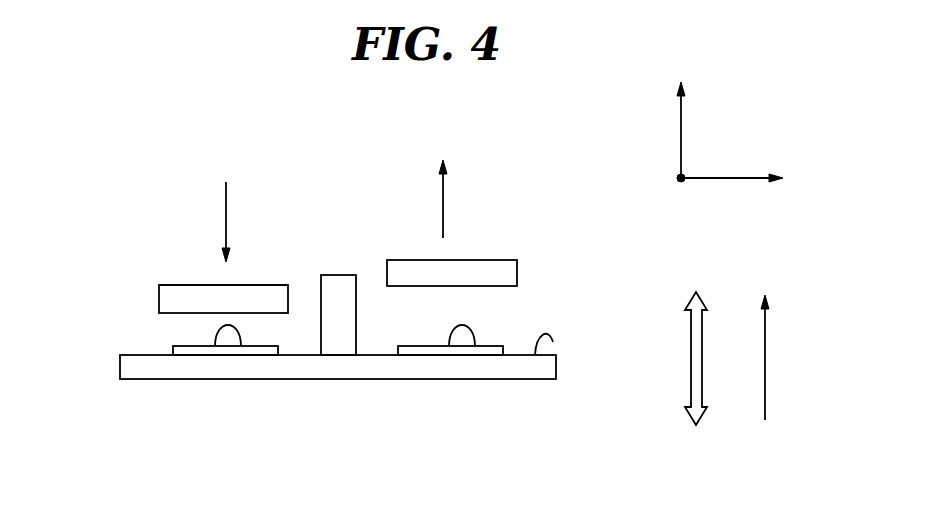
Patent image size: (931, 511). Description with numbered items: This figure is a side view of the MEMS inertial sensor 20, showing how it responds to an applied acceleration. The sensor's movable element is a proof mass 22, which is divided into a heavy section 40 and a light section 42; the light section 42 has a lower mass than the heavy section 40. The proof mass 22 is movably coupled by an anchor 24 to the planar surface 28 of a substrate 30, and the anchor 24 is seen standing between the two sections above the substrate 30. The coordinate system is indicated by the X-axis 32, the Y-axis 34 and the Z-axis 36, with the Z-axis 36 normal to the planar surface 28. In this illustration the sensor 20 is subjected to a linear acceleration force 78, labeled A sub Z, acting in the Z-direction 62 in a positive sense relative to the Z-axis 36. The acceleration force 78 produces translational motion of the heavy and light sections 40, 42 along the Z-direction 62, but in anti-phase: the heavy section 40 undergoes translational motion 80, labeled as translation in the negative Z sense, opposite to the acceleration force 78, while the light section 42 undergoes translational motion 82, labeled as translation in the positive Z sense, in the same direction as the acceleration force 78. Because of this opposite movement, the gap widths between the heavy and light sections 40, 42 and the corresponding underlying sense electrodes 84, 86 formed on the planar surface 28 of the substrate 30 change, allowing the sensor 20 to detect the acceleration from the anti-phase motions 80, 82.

The inertial sensor 20 is at (343, 483).
The proof mass 22 is at (185, 283).
The anchor 24 is at (338, 317).
The planar surface 28 is at (553, 342).
The substrate 30 is at (124, 363).
The X-axis 32 is at (683, 187).
The Y-axis 34 is at (733, 178).
The Z-axis 36 is at (683, 112).
The heavy section 40 is at (159, 293).
The light section 42 is at (510, 273).
The Z-direction 62 is at (702, 330).
The linear acceleration force 78 is at (765, 330).
The translational motion 80 is at (226, 228).
The translational motion 82 is at (443, 218).
The sense electrode 84 is at (238, 334).
The sense electrode 86 is at (472, 334).